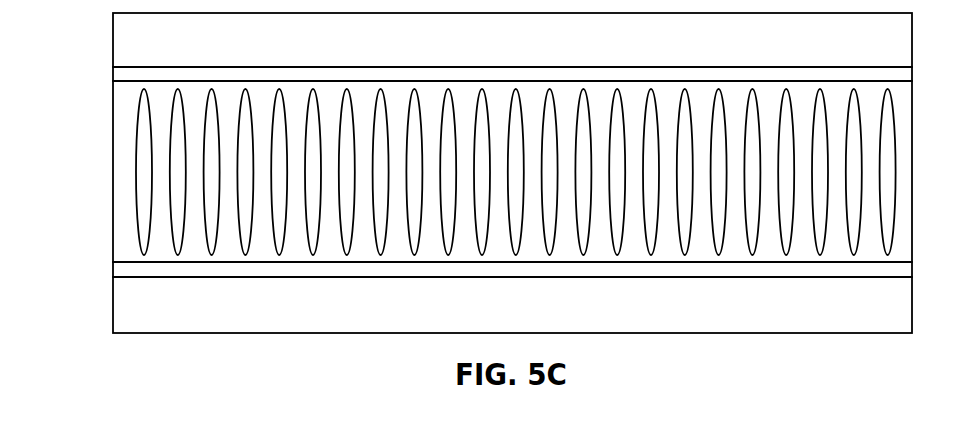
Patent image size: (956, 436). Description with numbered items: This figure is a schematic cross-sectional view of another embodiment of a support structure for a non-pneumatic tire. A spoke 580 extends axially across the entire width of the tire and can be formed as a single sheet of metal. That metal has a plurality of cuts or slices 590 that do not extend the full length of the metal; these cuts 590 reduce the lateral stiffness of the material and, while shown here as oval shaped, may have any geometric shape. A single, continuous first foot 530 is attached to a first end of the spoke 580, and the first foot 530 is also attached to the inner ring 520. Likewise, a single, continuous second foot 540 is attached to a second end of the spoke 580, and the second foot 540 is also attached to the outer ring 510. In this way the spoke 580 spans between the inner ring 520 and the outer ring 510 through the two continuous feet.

The outer ring 510 is at (113, 41).
The second foot 540 is at (113, 73).
The spoke 580 is at (125, 99).
The cuts or slices 590 is at (137, 200).
The first foot 530 is at (113, 271).
The inner ring 520 is at (113, 307).